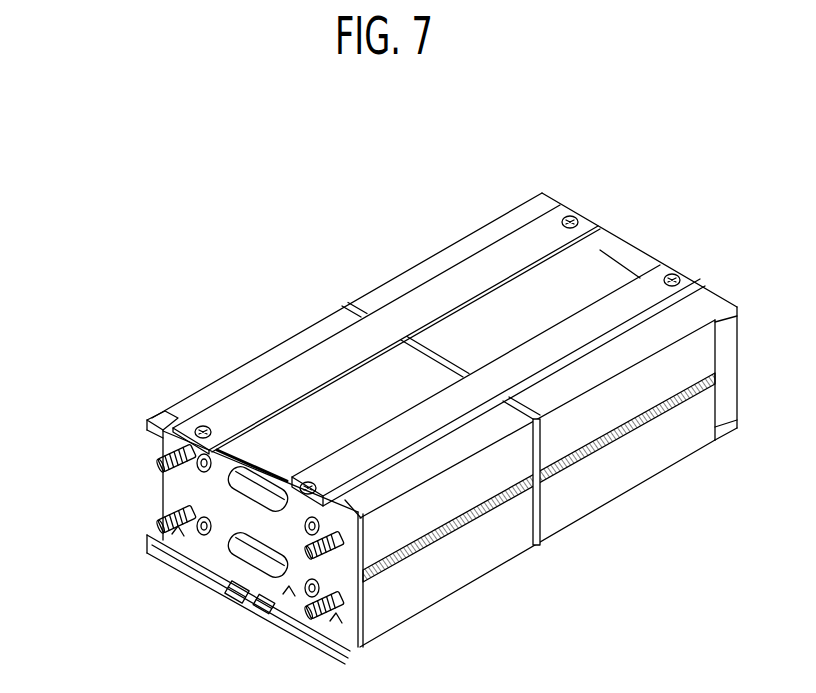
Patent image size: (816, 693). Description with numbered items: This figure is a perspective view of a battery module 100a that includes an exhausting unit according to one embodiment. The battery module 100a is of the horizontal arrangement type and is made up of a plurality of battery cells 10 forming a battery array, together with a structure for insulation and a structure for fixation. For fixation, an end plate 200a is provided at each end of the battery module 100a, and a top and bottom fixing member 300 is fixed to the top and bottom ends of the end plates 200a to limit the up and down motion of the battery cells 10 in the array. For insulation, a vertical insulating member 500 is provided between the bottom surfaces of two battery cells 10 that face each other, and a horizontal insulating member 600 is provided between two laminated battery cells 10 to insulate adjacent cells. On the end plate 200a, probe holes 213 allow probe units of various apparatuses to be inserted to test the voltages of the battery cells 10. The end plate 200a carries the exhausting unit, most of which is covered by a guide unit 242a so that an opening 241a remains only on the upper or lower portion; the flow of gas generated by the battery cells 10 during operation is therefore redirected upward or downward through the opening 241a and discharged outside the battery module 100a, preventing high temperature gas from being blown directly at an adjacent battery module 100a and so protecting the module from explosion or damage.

The battery module 100a is at (205, 200).
The battery cell 10 is at (441, 241).
The end plate 200a is at (645, 243).
The top and bottom fixing member 300 is at (308, 348).
The probe hole 213 is at (185, 565).
The opening 241a is at (245, 587).
The guide unit 242a is at (256, 612).
The vertical insulating member 500 is at (545, 520).
The horizontal insulating member 600 is at (452, 532).